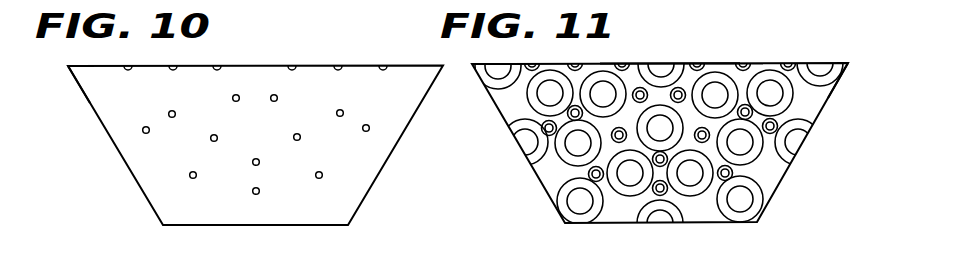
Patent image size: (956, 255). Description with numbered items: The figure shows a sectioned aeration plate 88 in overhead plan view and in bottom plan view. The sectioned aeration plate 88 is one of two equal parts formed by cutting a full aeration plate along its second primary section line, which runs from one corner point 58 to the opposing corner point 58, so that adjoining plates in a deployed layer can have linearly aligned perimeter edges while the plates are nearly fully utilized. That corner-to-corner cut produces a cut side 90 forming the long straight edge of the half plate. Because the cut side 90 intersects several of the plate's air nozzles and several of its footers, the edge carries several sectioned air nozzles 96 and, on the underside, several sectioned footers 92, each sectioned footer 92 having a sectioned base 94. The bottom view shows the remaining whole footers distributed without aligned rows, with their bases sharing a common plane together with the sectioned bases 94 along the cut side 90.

In FIG. 10, the sectioned aeration plate 88 is at (393, 190).
In FIG. 11, the sectioned aeration plate 88 is at (798, 189).
In FIG. 10, the cut side 90 is at (310, 65).
In FIG. 11, the cut side 90 is at (721, 63).
In FIG. 10, the corner point 58 is at (68, 66).
In FIG. 11, the corner point 58 is at (848, 63).
In FIG. 11, the sectioned footer 92 is at (805, 63).
In FIG. 11, the sectioned base 94 is at (661, 68).
In FIG. 11, the sectioned air nozzle 96 is at (743, 62).